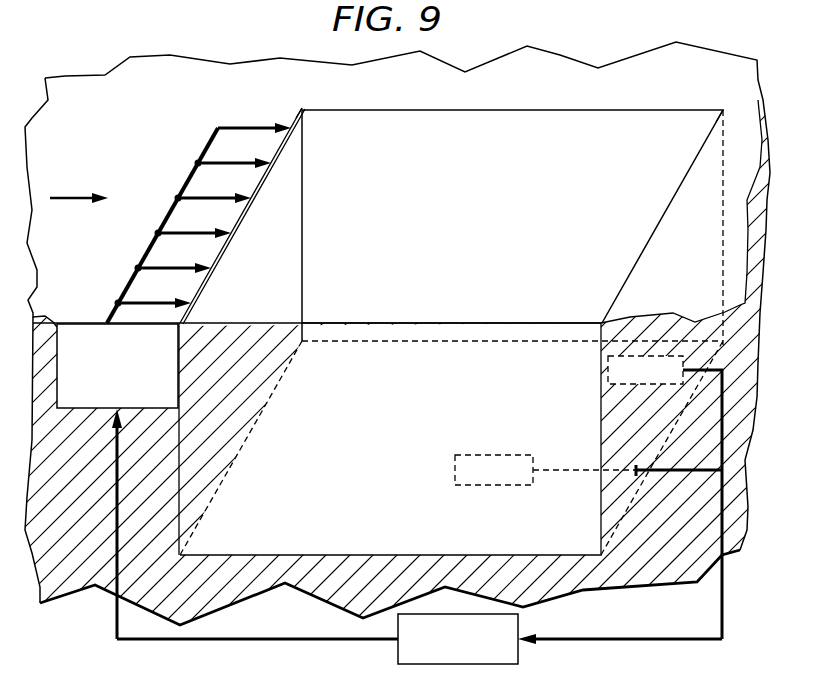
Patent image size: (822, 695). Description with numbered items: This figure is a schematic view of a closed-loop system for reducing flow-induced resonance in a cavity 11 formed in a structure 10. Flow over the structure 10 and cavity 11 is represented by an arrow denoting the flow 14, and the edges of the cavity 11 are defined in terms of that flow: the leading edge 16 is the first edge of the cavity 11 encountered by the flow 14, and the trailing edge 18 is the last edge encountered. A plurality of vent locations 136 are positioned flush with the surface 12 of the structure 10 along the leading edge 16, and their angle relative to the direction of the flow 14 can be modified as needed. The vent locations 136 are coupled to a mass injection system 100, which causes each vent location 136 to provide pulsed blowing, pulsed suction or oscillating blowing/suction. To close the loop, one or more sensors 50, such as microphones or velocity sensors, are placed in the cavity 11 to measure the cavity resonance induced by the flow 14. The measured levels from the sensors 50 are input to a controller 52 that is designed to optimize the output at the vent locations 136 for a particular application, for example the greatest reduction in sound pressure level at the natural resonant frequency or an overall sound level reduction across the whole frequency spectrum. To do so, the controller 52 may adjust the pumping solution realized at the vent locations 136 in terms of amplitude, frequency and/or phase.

The structure 10 is at (72, 90).
The cavity 11 is at (531, 127).
The surface 12 is at (131, 131).
The flow 14 is at (73, 198).
The leading edge 16 is at (302, 110).
The trailing edge 18 is at (723, 109).
The vent locations 136 is at (277, 160).
The mass injection system 100 is at (178, 366).
The sensors 50 is at (608, 370).
The controller 52 is at (398, 647).